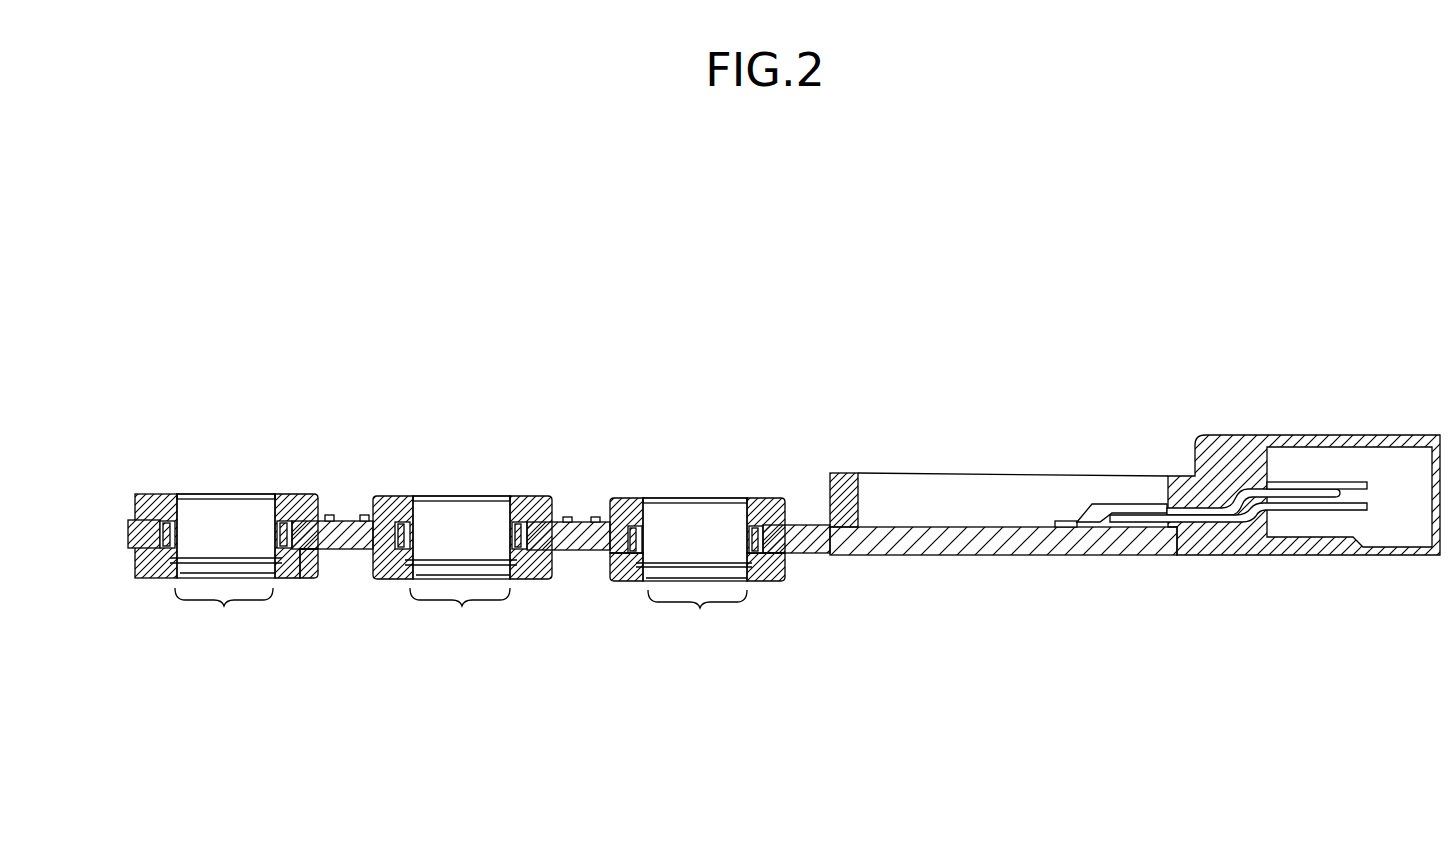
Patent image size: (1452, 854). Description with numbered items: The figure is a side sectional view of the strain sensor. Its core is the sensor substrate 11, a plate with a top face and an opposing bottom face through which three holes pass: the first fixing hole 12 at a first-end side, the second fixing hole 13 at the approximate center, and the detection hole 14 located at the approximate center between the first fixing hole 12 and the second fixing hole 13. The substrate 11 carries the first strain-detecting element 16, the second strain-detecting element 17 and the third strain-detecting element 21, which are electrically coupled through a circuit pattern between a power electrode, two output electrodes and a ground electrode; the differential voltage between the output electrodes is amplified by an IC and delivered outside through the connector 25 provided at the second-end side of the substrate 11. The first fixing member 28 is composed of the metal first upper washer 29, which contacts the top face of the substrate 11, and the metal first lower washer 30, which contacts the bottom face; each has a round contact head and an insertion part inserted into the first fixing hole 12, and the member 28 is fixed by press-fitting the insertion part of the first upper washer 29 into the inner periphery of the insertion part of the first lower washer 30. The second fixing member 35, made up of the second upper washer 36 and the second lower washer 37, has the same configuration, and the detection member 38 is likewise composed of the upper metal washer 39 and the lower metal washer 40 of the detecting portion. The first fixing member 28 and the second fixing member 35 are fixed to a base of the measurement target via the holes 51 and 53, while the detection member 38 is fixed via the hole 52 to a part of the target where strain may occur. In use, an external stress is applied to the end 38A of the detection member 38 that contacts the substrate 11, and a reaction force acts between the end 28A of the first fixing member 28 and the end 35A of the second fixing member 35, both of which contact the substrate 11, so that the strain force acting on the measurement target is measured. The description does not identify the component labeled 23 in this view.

The sensor substrate 11 is at (815, 545).
The first fixing hole 12 is at (142, 498).
The second fixing hole 13 is at (635, 565).
The detection hole 14 is at (393, 562).
The first strain-detecting element 16 is at (548, 545).
The second strain-detecting element 17 is at (360, 515).
The third strain-detecting element 21 is at (348, 458).
The upper sleeve portion 23 is at (640, 498).
The connector 25 is at (1218, 553).
The first fixing member 28 is at (300, 497).
The end of first fixing member 28A is at (315, 562).
The first upper washer 29 is at (277, 497).
The first lower washer 30 is at (160, 573).
The second fixing member 35 is at (775, 498).
The end of second fixing member 35A is at (612, 556).
The second upper washer 36 is at (831, 474).
The second lower washer 37 is at (760, 565).
The detection member 38 is at (567, 517).
The end of detection member 38A is at (582, 517).
The upper metal washer of detecting portion 39 is at (416, 497).
The lower metal washer of detecting portion 40 is at (530, 562).
The hole 51 is at (217, 545).
The hole 52 is at (462, 545).
The hole 53 is at (689, 545).